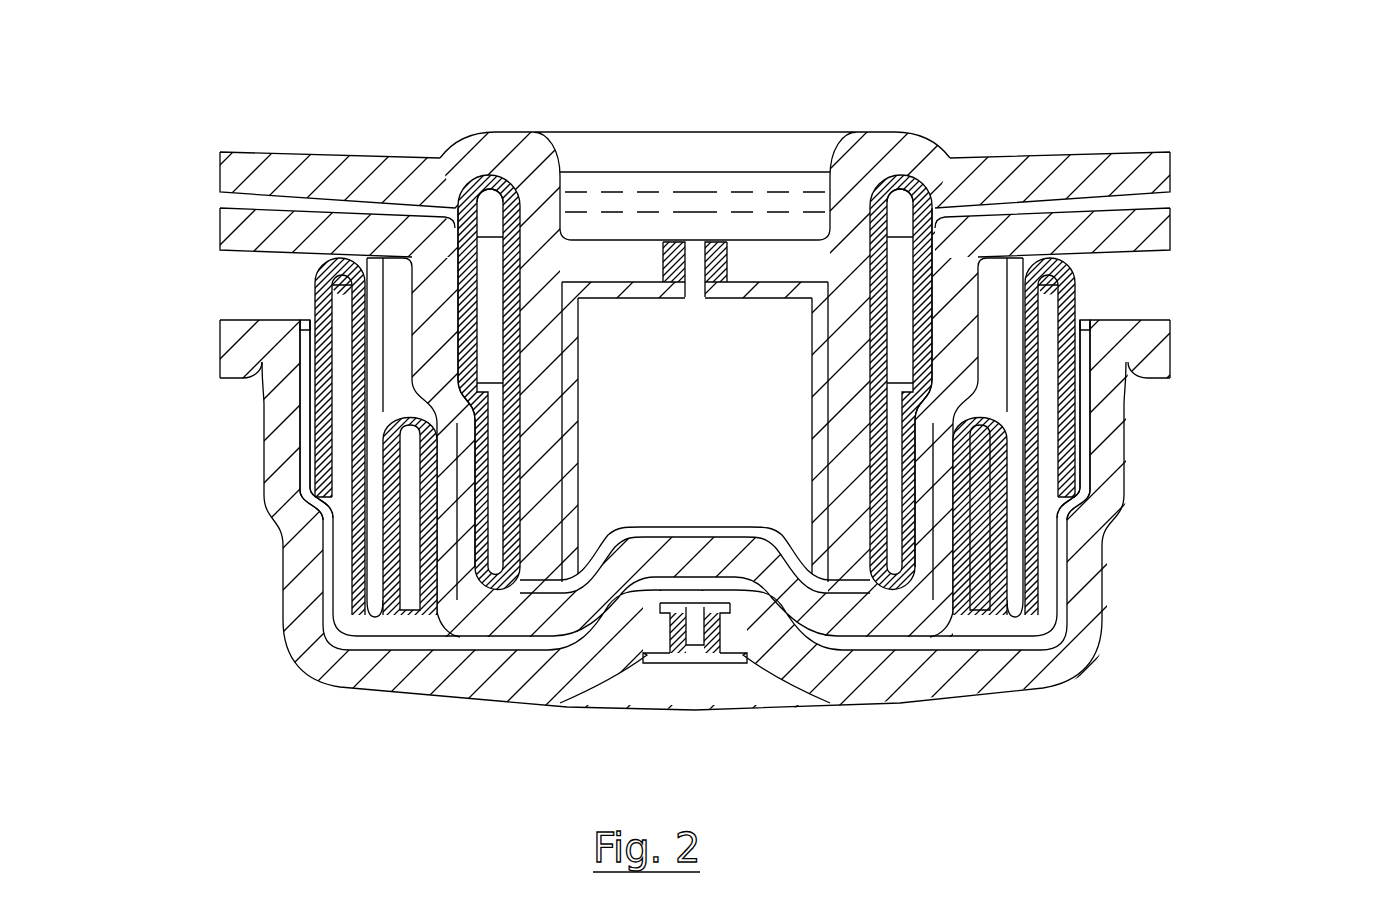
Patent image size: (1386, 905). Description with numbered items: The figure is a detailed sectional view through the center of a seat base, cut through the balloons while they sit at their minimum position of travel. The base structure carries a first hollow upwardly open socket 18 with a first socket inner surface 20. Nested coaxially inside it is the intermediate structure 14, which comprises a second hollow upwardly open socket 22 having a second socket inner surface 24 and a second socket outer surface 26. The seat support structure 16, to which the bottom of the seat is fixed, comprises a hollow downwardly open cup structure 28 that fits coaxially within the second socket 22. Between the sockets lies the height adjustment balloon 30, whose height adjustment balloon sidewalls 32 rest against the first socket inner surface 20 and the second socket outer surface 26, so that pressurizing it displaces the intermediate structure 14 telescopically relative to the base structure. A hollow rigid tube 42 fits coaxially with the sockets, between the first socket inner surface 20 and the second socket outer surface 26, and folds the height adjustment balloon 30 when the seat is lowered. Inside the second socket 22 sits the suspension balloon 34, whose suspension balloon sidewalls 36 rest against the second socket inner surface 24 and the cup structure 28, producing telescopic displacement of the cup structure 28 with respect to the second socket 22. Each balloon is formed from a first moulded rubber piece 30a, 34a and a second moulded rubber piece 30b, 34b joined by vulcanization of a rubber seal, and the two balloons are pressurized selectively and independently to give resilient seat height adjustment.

The intermediate structure 14 is at (233, 229).
The seat support structure 16 is at (231, 167).
The first hollow upwardly open socket 18 is at (322, 658).
The first socket inner surface 20 is at (272, 378).
The second hollow upwardly open socket 22 is at (432, 290).
The second socket inner surface 24 is at (905, 518).
The second socket outer surface 26 is at (957, 453).
The hollow downwardly open cup structure 28 is at (540, 317).
The height adjustment balloon 30 is at (353, 543).
The first moulded rubber piece 30a is at (1080, 360).
The second moulded rubber piece 30b is at (1067, 303).
The height adjustment balloon sidewalls 32 is at (363, 507).
The suspension balloon 34 is at (933, 262).
The first moulded rubber piece 34a is at (955, 265).
The second moulded rubber piece 34b is at (905, 192).
The suspension balloon sidewalls 36 is at (948, 282).
The hollow rigid tube 42 is at (1010, 307).